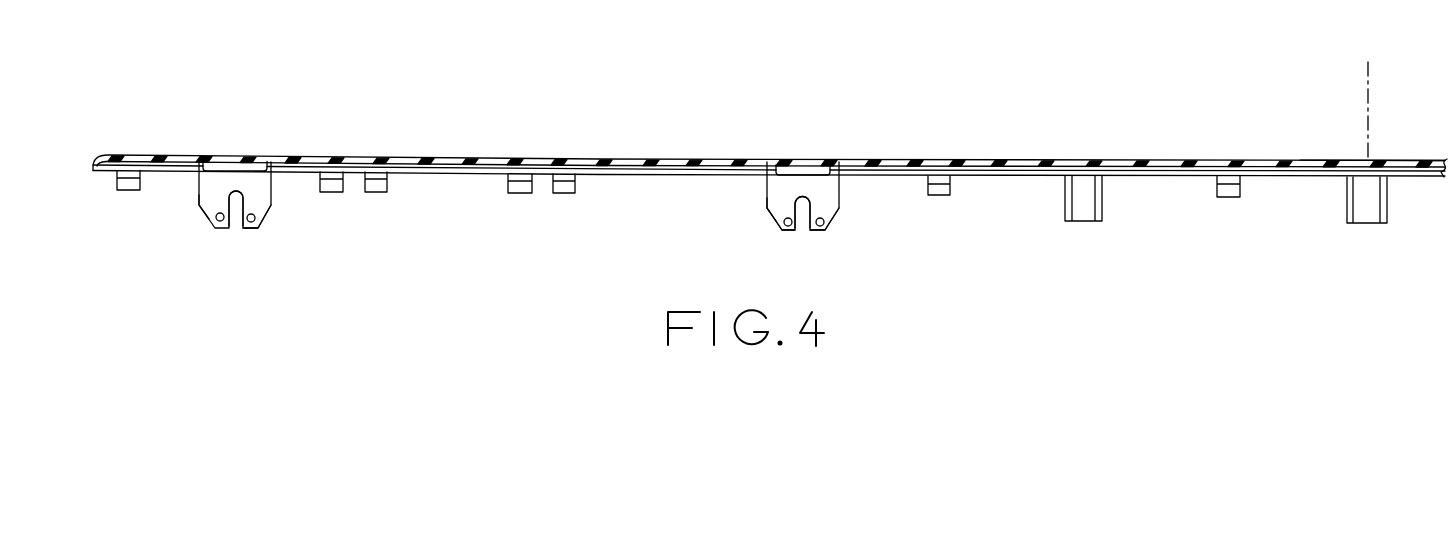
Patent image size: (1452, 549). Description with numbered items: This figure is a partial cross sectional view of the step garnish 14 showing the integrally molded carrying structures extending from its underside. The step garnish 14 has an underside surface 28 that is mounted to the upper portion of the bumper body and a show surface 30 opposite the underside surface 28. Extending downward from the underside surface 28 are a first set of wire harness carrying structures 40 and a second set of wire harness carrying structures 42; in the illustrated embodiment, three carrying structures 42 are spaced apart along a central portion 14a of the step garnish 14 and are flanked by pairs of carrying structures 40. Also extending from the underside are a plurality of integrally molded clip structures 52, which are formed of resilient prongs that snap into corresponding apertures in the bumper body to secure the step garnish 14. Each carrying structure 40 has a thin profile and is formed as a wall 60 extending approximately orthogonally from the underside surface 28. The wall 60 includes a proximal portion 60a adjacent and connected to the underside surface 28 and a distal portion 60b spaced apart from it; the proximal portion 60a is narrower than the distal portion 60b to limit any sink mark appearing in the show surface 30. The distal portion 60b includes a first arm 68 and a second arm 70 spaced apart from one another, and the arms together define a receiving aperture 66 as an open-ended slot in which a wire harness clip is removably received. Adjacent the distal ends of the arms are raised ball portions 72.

The step garnish 14 is at (770, 150).
The central portion 14a is at (1320, 158).
The show surface 30 is at (618, 157).
The underside surface 28 is at (628, 175).
The clip structures 52 is at (130, 192).
The wire harness carrying structures 42 is at (1085, 213).
The wire harness carrying structures 40 is at (201, 208).
The wall 60 is at (262, 190).
The proximal portion 60a is at (229, 167).
The distal portion 60b is at (263, 210).
The receiving aperture 66 is at (237, 207).
The first arm 68 is at (781, 232).
The second arm 70 is at (826, 220).
The raised ball portions 72 is at (252, 222).